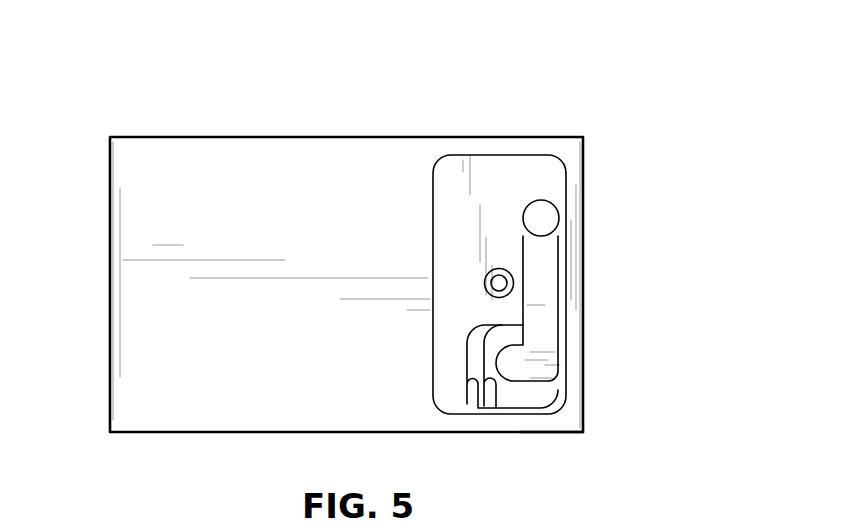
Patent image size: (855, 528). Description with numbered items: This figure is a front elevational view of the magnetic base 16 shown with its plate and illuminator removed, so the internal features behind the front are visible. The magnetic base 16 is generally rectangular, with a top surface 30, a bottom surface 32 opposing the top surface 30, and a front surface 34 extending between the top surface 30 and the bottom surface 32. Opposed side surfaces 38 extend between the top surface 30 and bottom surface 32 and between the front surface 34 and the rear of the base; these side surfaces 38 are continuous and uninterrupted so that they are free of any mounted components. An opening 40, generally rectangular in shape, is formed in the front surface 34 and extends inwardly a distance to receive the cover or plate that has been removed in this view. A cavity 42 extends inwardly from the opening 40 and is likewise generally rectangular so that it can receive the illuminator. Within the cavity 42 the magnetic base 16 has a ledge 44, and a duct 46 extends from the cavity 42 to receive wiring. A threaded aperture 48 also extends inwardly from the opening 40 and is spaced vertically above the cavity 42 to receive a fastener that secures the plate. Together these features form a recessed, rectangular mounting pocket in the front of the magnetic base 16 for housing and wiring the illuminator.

The magnetic base 16 is at (662, 93).
The top surface 30 is at (416, 136).
The bottom surface 32 is at (567, 433).
The front surface 34 is at (316, 160).
The side surfaces 38 is at (108, 260).
The opening 40 is at (521, 152).
The cavity 42 is at (494, 392).
The ledge 44 is at (473, 392).
The duct 46 is at (562, 268).
The threaded aperture 48 is at (503, 292).